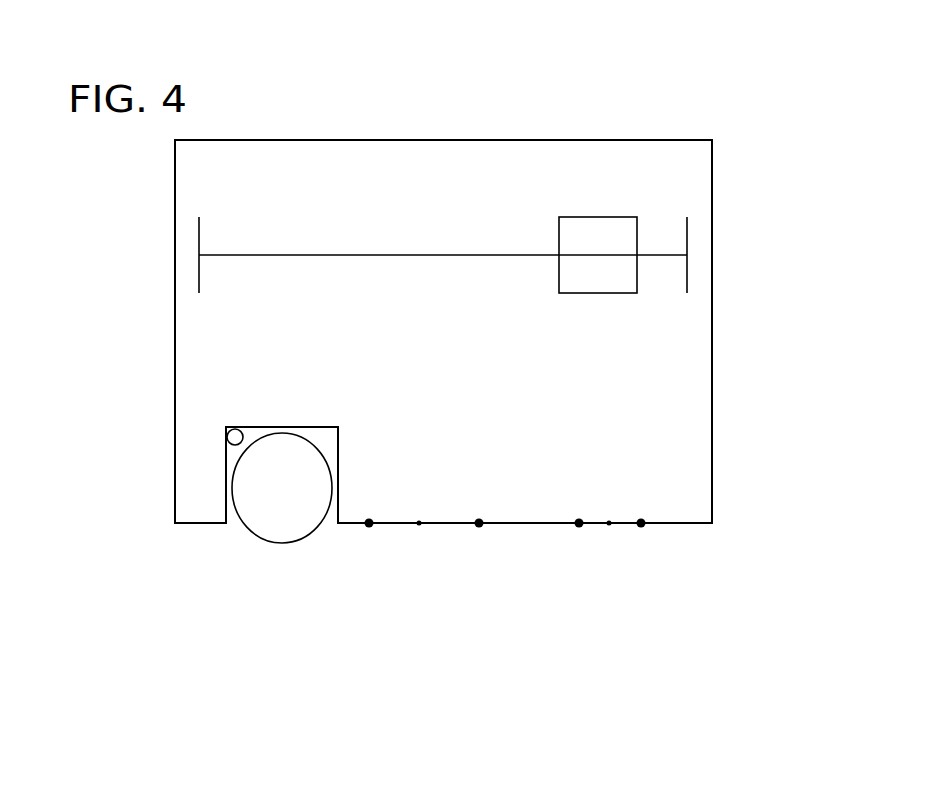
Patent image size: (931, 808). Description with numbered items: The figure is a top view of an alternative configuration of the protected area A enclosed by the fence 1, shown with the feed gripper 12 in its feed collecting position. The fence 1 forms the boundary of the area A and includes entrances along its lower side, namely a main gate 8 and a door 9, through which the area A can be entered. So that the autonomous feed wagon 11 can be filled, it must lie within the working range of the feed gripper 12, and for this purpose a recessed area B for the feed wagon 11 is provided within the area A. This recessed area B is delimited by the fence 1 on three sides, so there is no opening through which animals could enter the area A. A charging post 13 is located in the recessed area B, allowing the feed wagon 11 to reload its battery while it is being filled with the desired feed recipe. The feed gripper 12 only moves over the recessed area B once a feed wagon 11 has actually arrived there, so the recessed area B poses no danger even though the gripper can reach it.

The fence 1 is at (712, 419).
The main gate 8 is at (419, 523).
The door 9 is at (609, 523).
The autonomous feed wagon 11 is at (252, 531).
The feed gripper 12 is at (595, 217).
The charging post 13 is at (230, 429).
The protected area A is at (552, 173).
The recessed area B is at (317, 537).